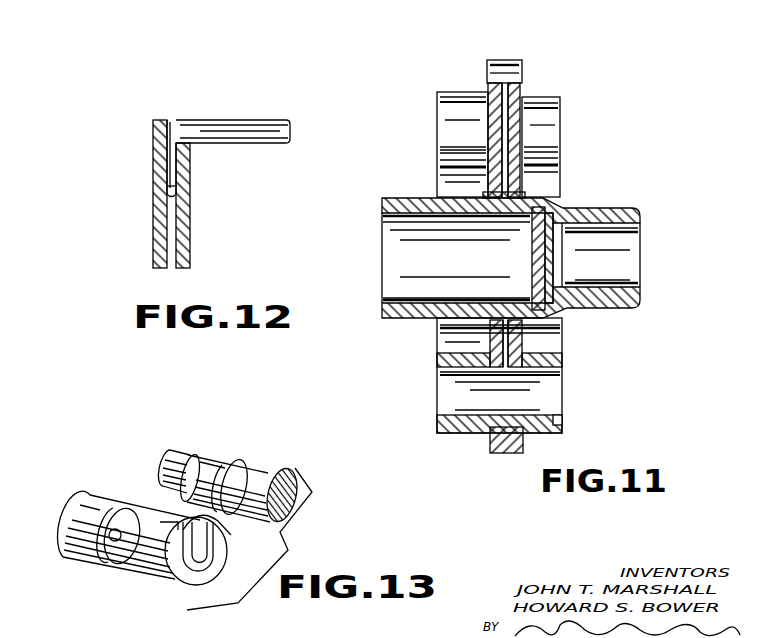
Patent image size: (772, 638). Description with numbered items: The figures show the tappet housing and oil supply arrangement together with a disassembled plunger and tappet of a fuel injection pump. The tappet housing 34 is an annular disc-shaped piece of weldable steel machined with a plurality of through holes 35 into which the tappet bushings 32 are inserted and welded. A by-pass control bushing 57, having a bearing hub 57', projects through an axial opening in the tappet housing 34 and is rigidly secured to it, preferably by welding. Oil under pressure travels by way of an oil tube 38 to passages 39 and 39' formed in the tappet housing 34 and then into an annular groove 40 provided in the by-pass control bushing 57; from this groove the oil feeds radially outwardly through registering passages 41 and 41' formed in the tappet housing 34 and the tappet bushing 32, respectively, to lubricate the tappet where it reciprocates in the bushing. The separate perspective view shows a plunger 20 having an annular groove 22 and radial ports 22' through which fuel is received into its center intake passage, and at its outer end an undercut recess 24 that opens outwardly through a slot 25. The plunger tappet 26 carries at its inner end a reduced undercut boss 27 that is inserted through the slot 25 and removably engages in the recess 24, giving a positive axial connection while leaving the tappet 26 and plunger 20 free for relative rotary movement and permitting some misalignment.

In FIG. 13, the plunger 20 is at (83, 557).
In FIG. 13, the annular groove 22 is at (118, 562).
In FIG. 13, the radial ports 22' is at (116, 500).
In FIG. 13, the undercut recess 24 is at (194, 563).
In FIG. 13, the slot 25 is at (206, 531).
In FIG. 13, the plunger tappet 26 is at (227, 462).
In FIG. 13, the reduced undercut boss 27 is at (172, 452).
In FIG. 11, the tappet bushing 32 is at (553, 418).
In FIG. 11, the tappet housing 34 is at (507, 60).
In FIG. 12, the tappet housing 34 is at (180, 218).
In FIG. 11, the through holes 35 is at (520, 178).
In FIG. 12, the oil tube 38 is at (267, 120).
In FIG. 12, the passage 39 is at (134, 156).
In FIG. 11, the passage 39' is at (544, 140).
In FIG. 12, the passage 39' is at (125, 203).
In FIG. 11, the annular groove 40 is at (502, 199).
In FIG. 11, the passage 41 is at (548, 386).
In FIG. 11, the passage 41' is at (559, 353).
In FIG. 11, the by-pass control bushing 57 is at (505, 234).
In FIG. 11, the bearing hub 57' is at (609, 230).